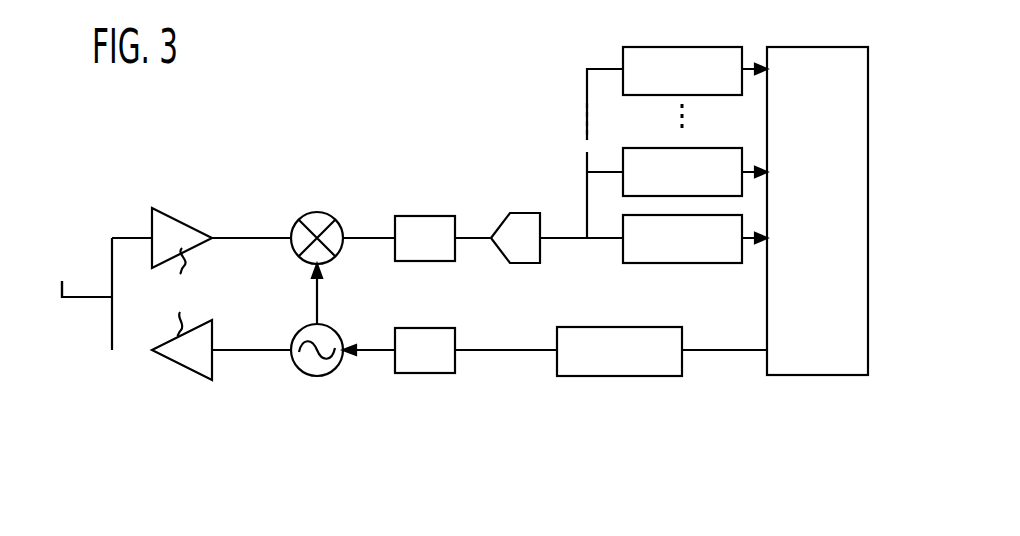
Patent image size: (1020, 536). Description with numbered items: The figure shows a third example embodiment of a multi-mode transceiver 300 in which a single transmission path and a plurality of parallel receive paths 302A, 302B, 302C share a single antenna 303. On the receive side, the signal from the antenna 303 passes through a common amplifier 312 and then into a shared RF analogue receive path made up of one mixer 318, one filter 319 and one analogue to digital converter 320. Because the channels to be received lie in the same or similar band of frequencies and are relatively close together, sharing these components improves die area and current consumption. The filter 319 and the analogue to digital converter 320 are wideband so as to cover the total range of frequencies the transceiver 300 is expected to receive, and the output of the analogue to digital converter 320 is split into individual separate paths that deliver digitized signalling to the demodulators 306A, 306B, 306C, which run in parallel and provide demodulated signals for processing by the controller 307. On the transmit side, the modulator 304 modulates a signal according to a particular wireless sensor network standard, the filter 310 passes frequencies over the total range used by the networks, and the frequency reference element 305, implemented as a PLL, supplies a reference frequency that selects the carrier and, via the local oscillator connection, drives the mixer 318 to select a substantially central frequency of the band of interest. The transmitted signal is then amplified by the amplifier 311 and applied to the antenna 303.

The transceiver 300 is at (327, 76).
The antenna 303 is at (69, 268).
The amplifier 312 is at (181, 222).
The amplifier 311 is at (177, 364).
The mixer 318 is at (318, 211).
The filter 319 is at (413, 215).
The analogue to digital converter 320 is at (510, 210).
The receive path 302A is at (605, 242).
The receive path 302B is at (616, 168).
The receive path 302C is at (602, 65).
The demodulator 306A is at (697, 265).
The demodulator 306B is at (718, 147).
The demodulator 306C is at (705, 44).
The controller 307 is at (807, 377).
The modulator element 304 is at (610, 378).
The filter 310 is at (423, 375).
The frequency reference element 305 is at (298, 377).